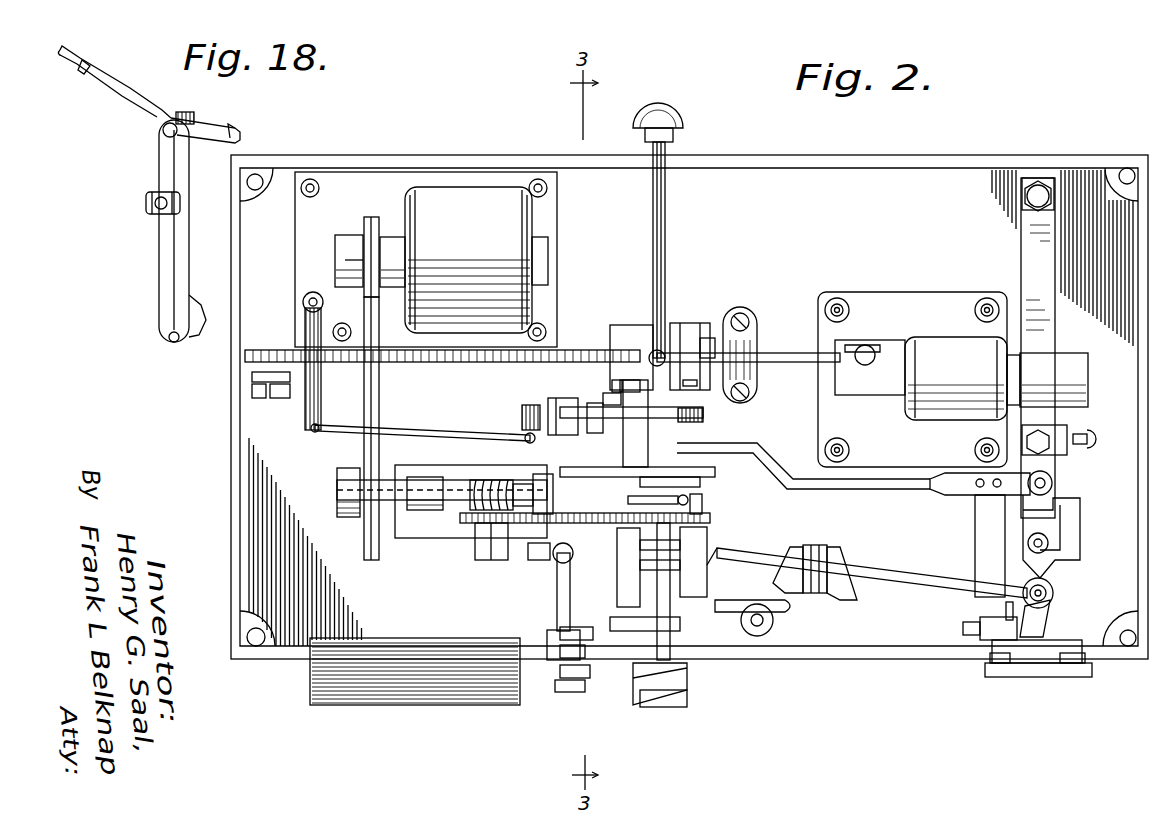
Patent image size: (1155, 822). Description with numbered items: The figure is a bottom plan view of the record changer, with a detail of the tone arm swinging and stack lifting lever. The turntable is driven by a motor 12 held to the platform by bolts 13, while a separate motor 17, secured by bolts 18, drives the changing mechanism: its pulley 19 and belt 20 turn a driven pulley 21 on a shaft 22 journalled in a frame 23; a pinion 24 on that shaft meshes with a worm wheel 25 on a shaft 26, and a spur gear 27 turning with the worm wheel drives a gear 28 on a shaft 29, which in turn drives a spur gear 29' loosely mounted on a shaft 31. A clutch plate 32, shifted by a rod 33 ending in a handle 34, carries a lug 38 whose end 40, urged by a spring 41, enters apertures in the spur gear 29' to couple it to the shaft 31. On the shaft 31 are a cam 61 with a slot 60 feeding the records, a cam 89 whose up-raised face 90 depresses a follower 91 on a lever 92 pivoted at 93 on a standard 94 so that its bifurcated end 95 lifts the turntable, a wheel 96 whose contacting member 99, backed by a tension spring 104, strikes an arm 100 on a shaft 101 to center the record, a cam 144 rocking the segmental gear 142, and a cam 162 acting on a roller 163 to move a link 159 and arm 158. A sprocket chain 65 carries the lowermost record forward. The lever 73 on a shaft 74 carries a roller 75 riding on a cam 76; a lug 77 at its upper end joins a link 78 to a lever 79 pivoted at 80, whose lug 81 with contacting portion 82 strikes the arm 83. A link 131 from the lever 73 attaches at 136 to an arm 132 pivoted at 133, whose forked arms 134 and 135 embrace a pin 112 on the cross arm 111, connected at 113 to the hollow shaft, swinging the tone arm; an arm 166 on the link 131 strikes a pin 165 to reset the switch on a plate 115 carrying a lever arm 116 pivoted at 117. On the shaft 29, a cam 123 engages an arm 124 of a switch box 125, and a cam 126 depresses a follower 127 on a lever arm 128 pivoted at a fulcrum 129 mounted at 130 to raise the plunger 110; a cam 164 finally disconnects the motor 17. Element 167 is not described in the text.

In FIG. 2, the motor 12 is at (955, 408).
In FIG. 2, the bolts 13 is at (988, 300).
In FIG. 2, the motor 17 is at (483, 195).
In FIG. 2, the bolts 18 is at (316, 182).
In FIG. 2, the pulley 19 is at (364, 232).
In FIG. 2, the belt 20 is at (380, 386).
In FIG. 2, the driven pulley 21 is at (345, 462).
In FIG. 2, the shaft 22 is at (350, 518).
In FIG. 2, the frame 23 is at (415, 475).
In FIG. 2, the pinion 24 is at (476, 482).
In FIG. 2, the worm wheel 25 is at (540, 478).
In FIG. 2, the shaft 26 is at (478, 540).
In FIG. 2, the spur gear 27 is at (462, 518).
In FIG. 2, the gear 28 is at (598, 512).
In FIG. 2, the shaft 29 is at (542, 592).
In FIG. 2, the spur gear 29' is at (738, 518).
In FIG. 2, the shaft 31 is at (670, 636).
In FIG. 2, the clutch plate 32 is at (634, 500).
In FIG. 2, the rod 33 is at (667, 212).
In FIG. 2, the handle 34 is at (672, 114).
In FIG. 2, the lug 38 is at (688, 498).
In FIG. 2, the end of lug 40 is at (702, 502).
In FIG. 2, the spring 41 is at (700, 482).
In FIG. 2, the slot 60 is at (660, 700).
In FIG. 2, the cam 61 is at (675, 708).
In FIG. 2, the sprocket chain 65 is at (572, 348).
In FIG. 18, the lever 73 is at (159, 272).
In FIG. 2, the lever 73 is at (604, 420).
In FIG. 18, the shaft 74 is at (167, 340).
In FIG. 18, the roller 75 is at (156, 192).
In FIG. 2, the roller 75 is at (590, 408).
In FIG. 2, the cam 76 is at (556, 405).
In FIG. 18, the lug 77 is at (145, 108).
In FIG. 2, the lug 77 is at (525, 420).
In FIG. 18, the link 78 is at (86, 62).
In FIG. 2, the link 78 is at (348, 430).
In FIG. 2, the lever 79 is at (321, 418).
In FIG. 2, the pivot 80 is at (313, 292).
In FIG. 2, the lug 81 is at (278, 398).
In FIG. 2, the contacting portion 82 is at (258, 396).
In FIG. 2, the arm 83 is at (252, 376).
In FIG. 2, the cam 89 is at (635, 348).
In FIG. 2, the up-raised face 90 is at (672, 348).
In FIG. 2, the follower 91 is at (604, 398).
In FIG. 2, the lever 92 is at (675, 330).
In FIG. 2, the pivot 93 is at (753, 340).
In FIG. 2, the standard 94 is at (750, 376).
In FIG. 2, the bifurcated end 95 is at (870, 343).
In FIG. 2, the wheel 96 is at (702, 416).
In FIG. 2, the contacting member 99 is at (624, 376).
In FIG. 2, the arm 100 is at (701, 392).
In FIG. 2, the shaft 101 is at (715, 340).
In FIG. 2, the tension spring 104 is at (650, 440).
In FIG. 2, the plunger 110 is at (1046, 594).
In FIG. 2, the cross arm 111 is at (1055, 590).
In FIG. 2, the pin 112 is at (1048, 543).
In FIG. 2, the connection 113 is at (1048, 620).
In FIG. 2, the plate 115 is at (1040, 670).
In FIG. 2, the lever arm 116 is at (975, 648).
In FIG. 2, the pivot 117 is at (1072, 664).
In FIG. 2, the cam 123 is at (580, 632).
In FIG. 2, the arm 124 is at (547, 645).
In FIG. 2, the switch box 125 is at (500, 706).
In FIG. 2, the cam 126 is at (528, 556).
In FIG. 2, the follower 127 is at (560, 560).
In FIG. 2, the lever arm 128 is at (610, 550).
In FIG. 2, the fulcrum 129 is at (858, 552).
In FIG. 2, the fulcrum mounting 130 is at (830, 578).
In FIG. 18, the link 131 is at (232, 126).
In FIG. 2, the link 131 is at (760, 441).
In FIG. 2, the arm 132 is at (1045, 255).
In FIG. 2, the pivot 133 is at (1042, 193).
In FIG. 2, the arm 134 is at (1025, 527).
In FIG. 2, the arm 135 is at (1075, 517).
In FIG. 2, the link attachment 136 is at (1052, 480).
In FIG. 2, the segmental gear 142 is at (745, 558).
In FIG. 2, the cam 144 is at (650, 580).
In FIG. 2, the arm 158 is at (782, 620).
In FIG. 2, the link 159 is at (740, 612).
In FIG. 2, the cam 162 is at (670, 624).
In FIG. 2, the roller 163 is at (585, 650).
In FIG. 2, the cam 164 is at (590, 672).
In FIG. 2, the projecting pin 165 is at (1005, 608).
In FIG. 2, the arm 166 is at (975, 550).
In FIG. 2, the collar 167 is at (568, 694).